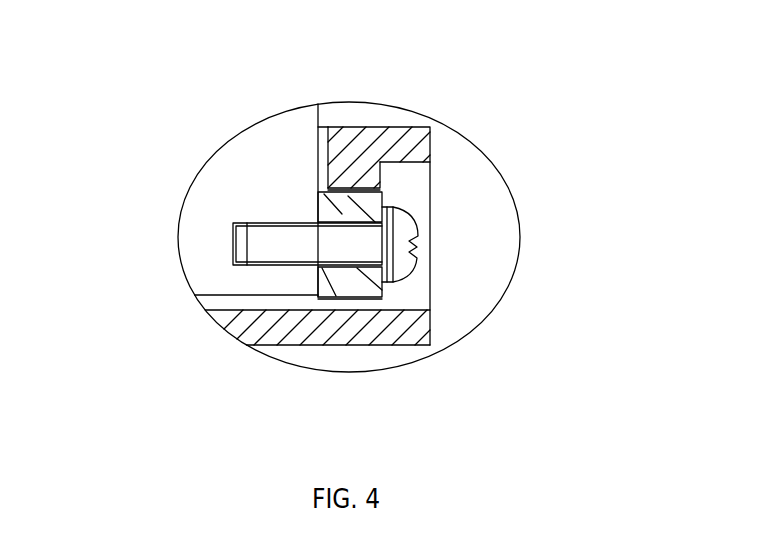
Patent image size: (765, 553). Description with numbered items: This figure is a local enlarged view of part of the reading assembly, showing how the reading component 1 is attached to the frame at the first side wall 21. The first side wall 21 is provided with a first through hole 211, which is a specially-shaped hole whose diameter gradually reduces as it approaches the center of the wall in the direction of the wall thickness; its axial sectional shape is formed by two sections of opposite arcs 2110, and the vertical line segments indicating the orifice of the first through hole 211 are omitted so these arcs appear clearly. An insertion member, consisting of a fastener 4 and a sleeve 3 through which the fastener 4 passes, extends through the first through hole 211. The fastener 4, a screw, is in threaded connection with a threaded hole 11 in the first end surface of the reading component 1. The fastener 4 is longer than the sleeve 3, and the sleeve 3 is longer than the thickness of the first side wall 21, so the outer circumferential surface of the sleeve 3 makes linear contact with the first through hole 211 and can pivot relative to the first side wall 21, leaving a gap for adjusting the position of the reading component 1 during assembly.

The reading component 1 is at (218, 202).
The threaded hole 11 is at (232, 247).
The sleeve 3 is at (320, 193).
The first side wall 21 is at (379, 127).
The first through hole 211 is at (380, 186).
The arcs 2110 is at (367, 188).
The fastener 4 is at (408, 272).